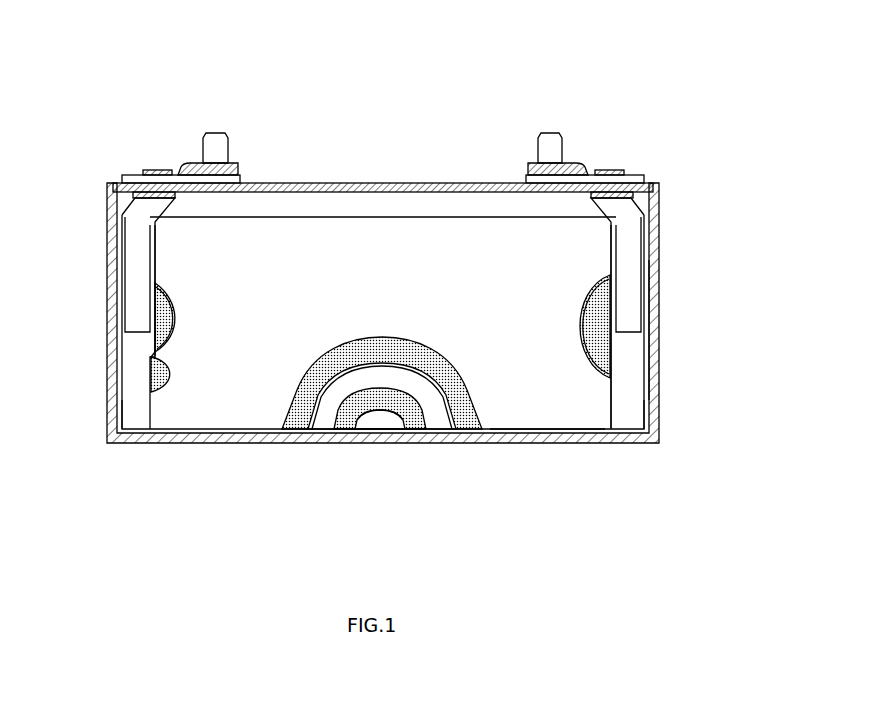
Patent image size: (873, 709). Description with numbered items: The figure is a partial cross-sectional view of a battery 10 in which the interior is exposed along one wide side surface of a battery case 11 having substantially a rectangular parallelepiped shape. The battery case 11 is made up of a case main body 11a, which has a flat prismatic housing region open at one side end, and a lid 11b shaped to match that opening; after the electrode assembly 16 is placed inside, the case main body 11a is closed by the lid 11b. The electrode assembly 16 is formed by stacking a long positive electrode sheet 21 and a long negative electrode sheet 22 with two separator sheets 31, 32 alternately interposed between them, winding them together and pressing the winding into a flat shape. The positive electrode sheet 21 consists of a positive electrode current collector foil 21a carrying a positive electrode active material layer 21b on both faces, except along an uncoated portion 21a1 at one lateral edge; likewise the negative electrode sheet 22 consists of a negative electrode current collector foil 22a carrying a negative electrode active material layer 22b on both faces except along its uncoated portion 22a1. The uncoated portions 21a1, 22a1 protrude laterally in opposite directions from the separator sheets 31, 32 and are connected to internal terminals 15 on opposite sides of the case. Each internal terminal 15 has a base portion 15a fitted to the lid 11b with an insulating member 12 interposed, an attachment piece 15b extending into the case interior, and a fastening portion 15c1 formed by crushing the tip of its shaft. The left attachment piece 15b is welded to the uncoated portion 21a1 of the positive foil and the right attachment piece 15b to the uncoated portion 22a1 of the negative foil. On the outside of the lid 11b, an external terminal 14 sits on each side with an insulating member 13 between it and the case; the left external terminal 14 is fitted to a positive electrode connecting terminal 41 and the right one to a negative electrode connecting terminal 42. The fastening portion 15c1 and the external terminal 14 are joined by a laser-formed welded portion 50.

The battery 10 is at (688, 88).
The battery case 11 is at (656, 238).
The case main body 11a is at (660, 330).
The lid 11b is at (318, 183).
The insulating member 12 is at (133, 195).
The insulating member 13 is at (121, 180).
The external terminal 14 is at (185, 163).
The internal terminal 15 is at (178, 200).
The base portion 15a is at (157, 224).
The attachment piece 15b is at (127, 300).
The fastening portion 15c1 is at (157, 170).
The electrode assembly 16 is at (270, 216).
The positive electrode sheet 21 is at (348, 429).
The positive electrode current collector foil 21a is at (120, 380).
The uncoated portion 21a1 is at (135, 425).
The positive electrode active material layer 21b is at (180, 314).
The negative electrode sheet 22 is at (292, 429).
The negative electrode current collector foil 22a is at (648, 382).
The uncoated portion 22a1 is at (628, 425).
The negative electrode active material layer 22b is at (170, 372).
The separator sheet 31 is at (178, 343).
The separator sheet 32 is at (380, 429).
The positive electrode connecting terminal 41 is at (222, 130).
The negative electrode connecting terminal 42 is at (550, 130).
The welded portion 50 is at (140, 171).